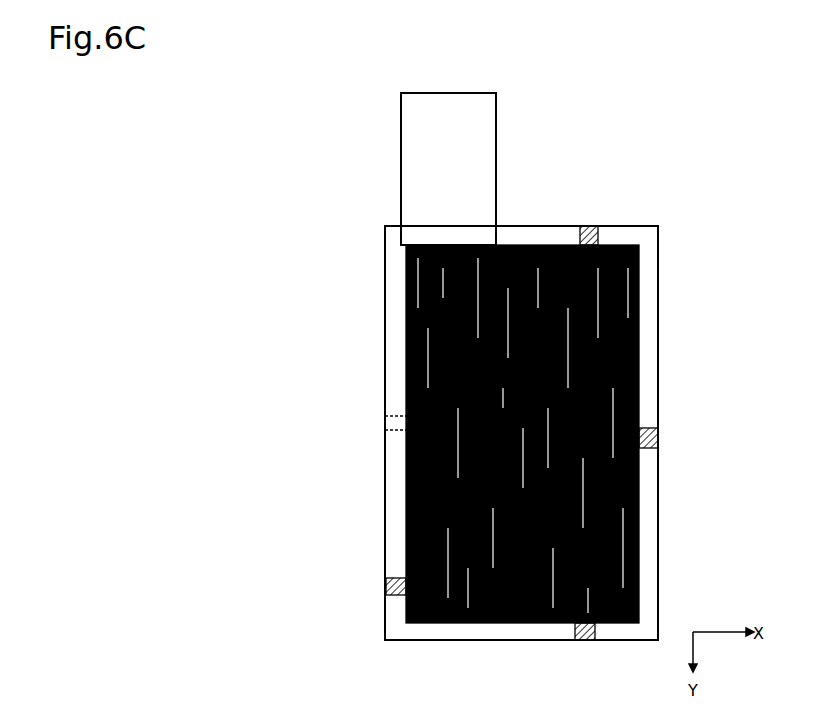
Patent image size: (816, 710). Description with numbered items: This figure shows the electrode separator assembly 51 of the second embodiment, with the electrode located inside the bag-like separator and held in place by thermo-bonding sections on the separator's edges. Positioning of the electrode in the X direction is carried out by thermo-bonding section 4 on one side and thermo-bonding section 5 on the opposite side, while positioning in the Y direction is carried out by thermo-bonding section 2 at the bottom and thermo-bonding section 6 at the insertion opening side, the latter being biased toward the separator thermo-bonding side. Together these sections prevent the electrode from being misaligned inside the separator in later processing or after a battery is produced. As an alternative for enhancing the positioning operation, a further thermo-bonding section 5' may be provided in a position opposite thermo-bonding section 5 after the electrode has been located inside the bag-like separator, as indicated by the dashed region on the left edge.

The electrode separator assembly 51 is at (643, 694).
The thermo-bonding section 2 is at (578, 632).
The thermo-bonding section 4 is at (379, 578).
The thermo-bonding section 5 is at (673, 436).
The thermo-bonding section 5' is at (373, 443).
The thermo-bonding section 6 is at (583, 218).